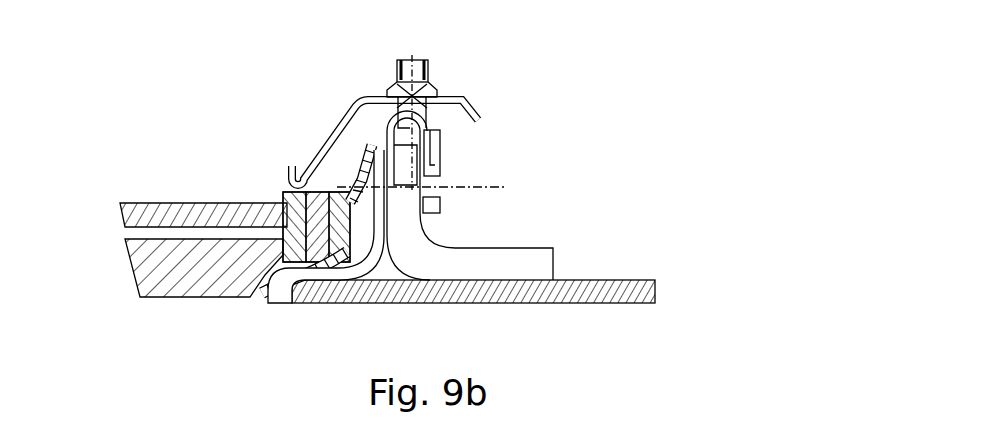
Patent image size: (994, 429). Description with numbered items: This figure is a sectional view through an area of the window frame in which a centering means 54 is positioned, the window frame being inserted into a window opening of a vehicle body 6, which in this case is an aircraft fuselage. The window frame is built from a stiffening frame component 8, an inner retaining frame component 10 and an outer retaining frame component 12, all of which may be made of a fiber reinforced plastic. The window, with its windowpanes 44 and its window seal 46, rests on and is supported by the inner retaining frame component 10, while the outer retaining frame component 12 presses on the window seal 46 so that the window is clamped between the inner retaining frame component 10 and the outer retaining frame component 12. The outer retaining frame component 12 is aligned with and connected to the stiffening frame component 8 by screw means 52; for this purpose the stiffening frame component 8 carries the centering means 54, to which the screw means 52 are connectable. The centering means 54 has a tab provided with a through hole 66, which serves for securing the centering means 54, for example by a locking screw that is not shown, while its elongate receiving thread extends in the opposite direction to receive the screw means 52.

The vehicle body 6 is at (633, 280).
The stiffening frame component 8 is at (510, 258).
The inner retaining frame component 10 is at (362, 295).
The outer retaining frame component 12 is at (340, 140).
The windowpanes 44 is at (168, 203).
The window seal 46 is at (310, 295).
The screw means 52 is at (430, 76).
The centering means 54 is at (437, 90).
The through hole 66 is at (444, 181).